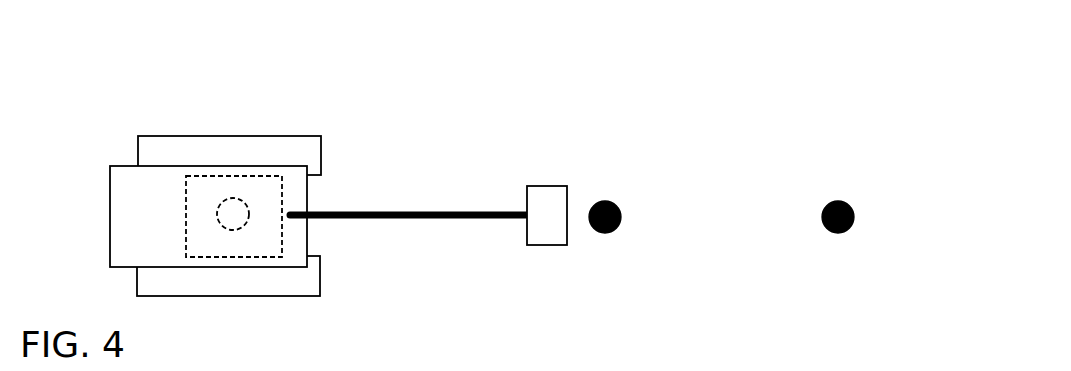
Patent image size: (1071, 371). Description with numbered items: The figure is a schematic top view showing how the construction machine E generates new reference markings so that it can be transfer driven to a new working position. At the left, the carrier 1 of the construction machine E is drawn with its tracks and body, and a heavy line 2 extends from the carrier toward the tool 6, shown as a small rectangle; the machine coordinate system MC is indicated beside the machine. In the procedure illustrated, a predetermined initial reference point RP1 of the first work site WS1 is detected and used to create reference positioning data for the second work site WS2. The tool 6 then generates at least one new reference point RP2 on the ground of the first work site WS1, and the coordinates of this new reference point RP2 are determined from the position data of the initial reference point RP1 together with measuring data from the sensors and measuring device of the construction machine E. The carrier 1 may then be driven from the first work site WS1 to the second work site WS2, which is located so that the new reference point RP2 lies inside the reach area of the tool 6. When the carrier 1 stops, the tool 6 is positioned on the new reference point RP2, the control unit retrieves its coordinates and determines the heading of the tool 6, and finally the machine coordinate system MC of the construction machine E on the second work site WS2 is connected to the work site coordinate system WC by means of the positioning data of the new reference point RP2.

The carrier 1 is at (116, 139).
The boom / work implement 2 is at (418, 219).
The tool 6 is at (543, 202).
The construction machine E is at (227, 95).
The machine coordinate system MC is at (325, 122).
The first work site WS1 is at (445, 60).
The second work site WS2 is at (797, 60).
The work site coordinate system WC is at (933, 89).
The initial reference point RP1 is at (608, 233).
The new reference point RP2 is at (842, 235).